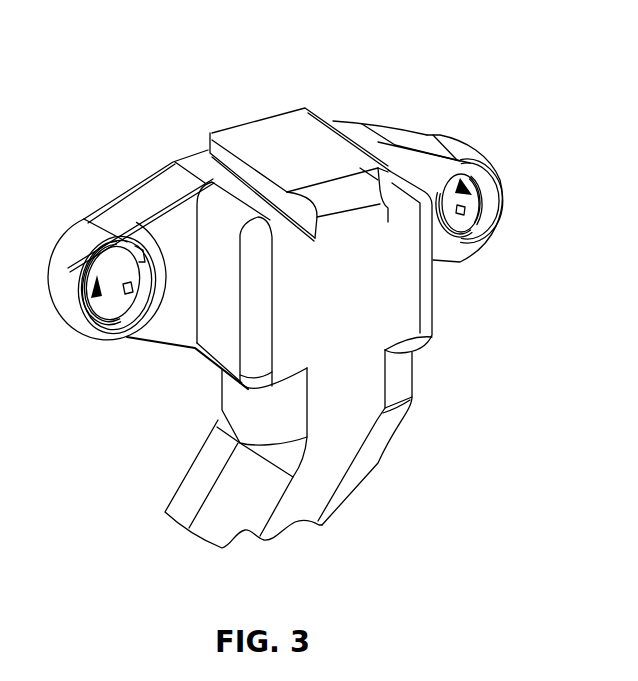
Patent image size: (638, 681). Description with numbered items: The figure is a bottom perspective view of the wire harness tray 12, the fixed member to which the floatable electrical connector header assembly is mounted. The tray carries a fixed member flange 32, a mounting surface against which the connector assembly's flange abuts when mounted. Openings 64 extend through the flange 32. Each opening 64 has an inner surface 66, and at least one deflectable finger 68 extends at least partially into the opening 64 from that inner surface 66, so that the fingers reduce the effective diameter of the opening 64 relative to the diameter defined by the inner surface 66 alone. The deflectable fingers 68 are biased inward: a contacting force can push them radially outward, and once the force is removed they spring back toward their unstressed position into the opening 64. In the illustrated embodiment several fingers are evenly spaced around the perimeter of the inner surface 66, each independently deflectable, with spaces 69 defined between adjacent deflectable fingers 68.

The wire harness tray 12 is at (478, 66).
The fixed member flange 32 is at (149, 184).
The openings 64 is at (78, 311).
The inner surface 66 is at (118, 321).
The deflectable finger 68 is at (127, 243).
The spaces 69 is at (133, 290).